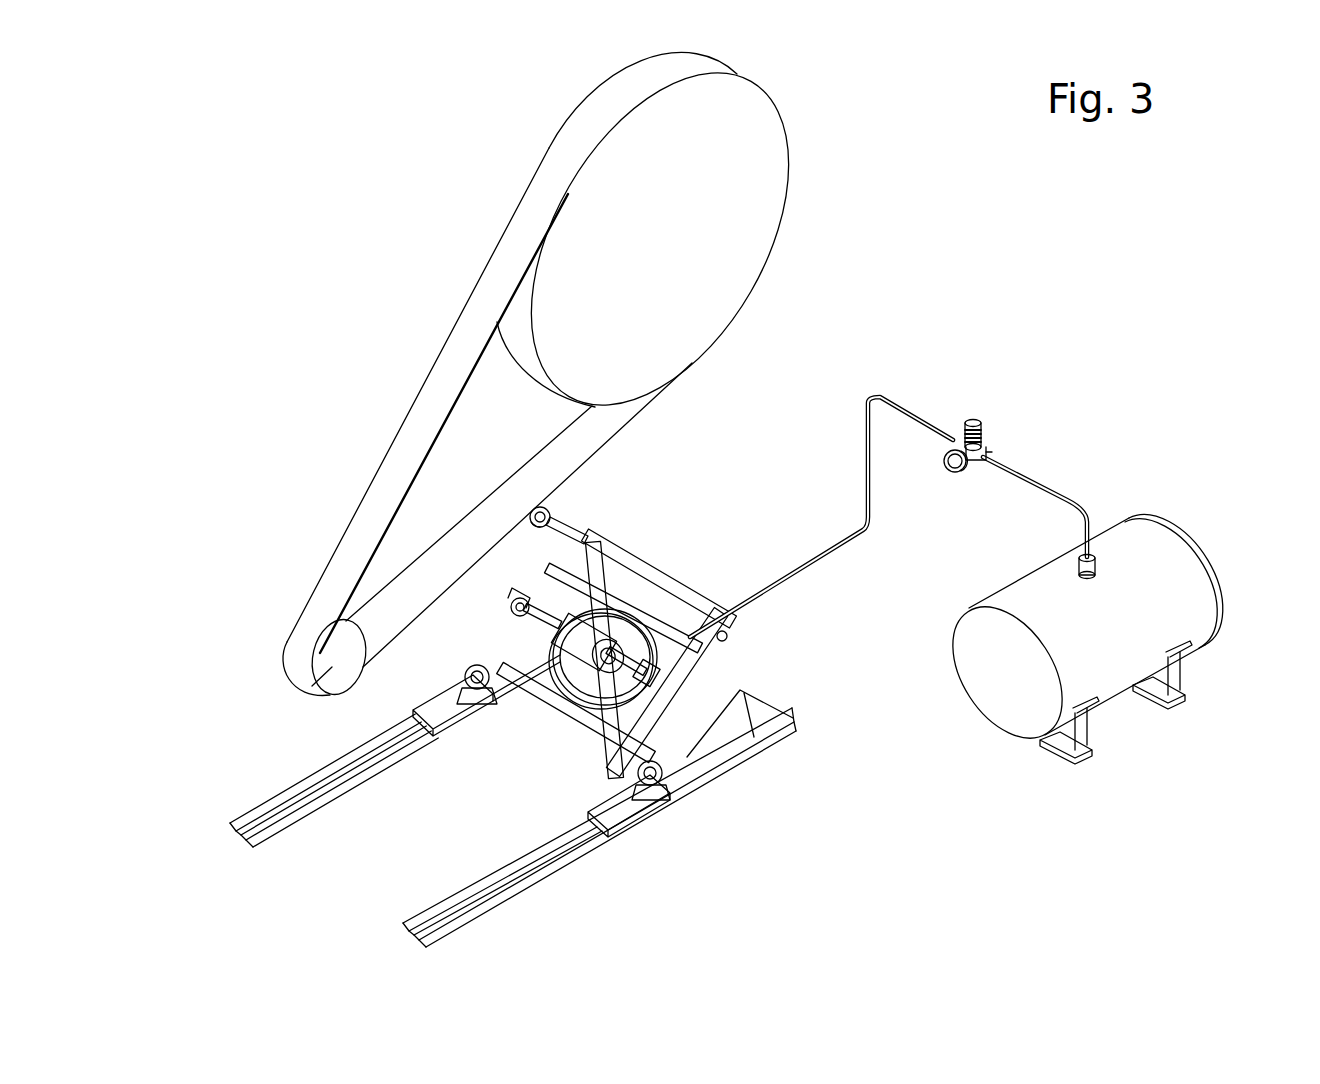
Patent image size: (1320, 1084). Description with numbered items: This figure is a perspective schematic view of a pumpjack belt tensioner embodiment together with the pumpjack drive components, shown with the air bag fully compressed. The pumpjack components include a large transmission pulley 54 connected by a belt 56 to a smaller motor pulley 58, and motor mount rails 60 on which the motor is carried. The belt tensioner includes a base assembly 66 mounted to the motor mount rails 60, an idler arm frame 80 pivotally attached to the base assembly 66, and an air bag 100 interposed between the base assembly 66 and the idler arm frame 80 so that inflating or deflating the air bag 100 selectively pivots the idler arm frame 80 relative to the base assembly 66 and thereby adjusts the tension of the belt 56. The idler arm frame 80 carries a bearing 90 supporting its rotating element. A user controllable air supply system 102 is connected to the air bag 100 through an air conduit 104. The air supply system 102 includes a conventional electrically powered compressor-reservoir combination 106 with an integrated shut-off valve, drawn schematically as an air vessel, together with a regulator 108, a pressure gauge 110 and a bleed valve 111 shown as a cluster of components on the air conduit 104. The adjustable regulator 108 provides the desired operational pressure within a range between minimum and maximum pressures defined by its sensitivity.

The transmission pulley 54 is at (740, 165).
The belt 56 is at (452, 357).
The motor pulley 58 is at (310, 687).
The motor mount rails 60 is at (560, 857).
The base assembly 66 is at (788, 713).
The idler arm frame 80 is at (724, 650).
The bearing 90 is at (550, 508).
The air bag 100 is at (624, 617).
The air supply system 102 is at (1068, 497).
The air conduit 104 is at (812, 565).
The compressor-reservoir combination 106 is at (1120, 652).
The regulator 108 is at (965, 420).
The pressure gauge 110 is at (977, 414).
The bleed valve 111 is at (984, 434).